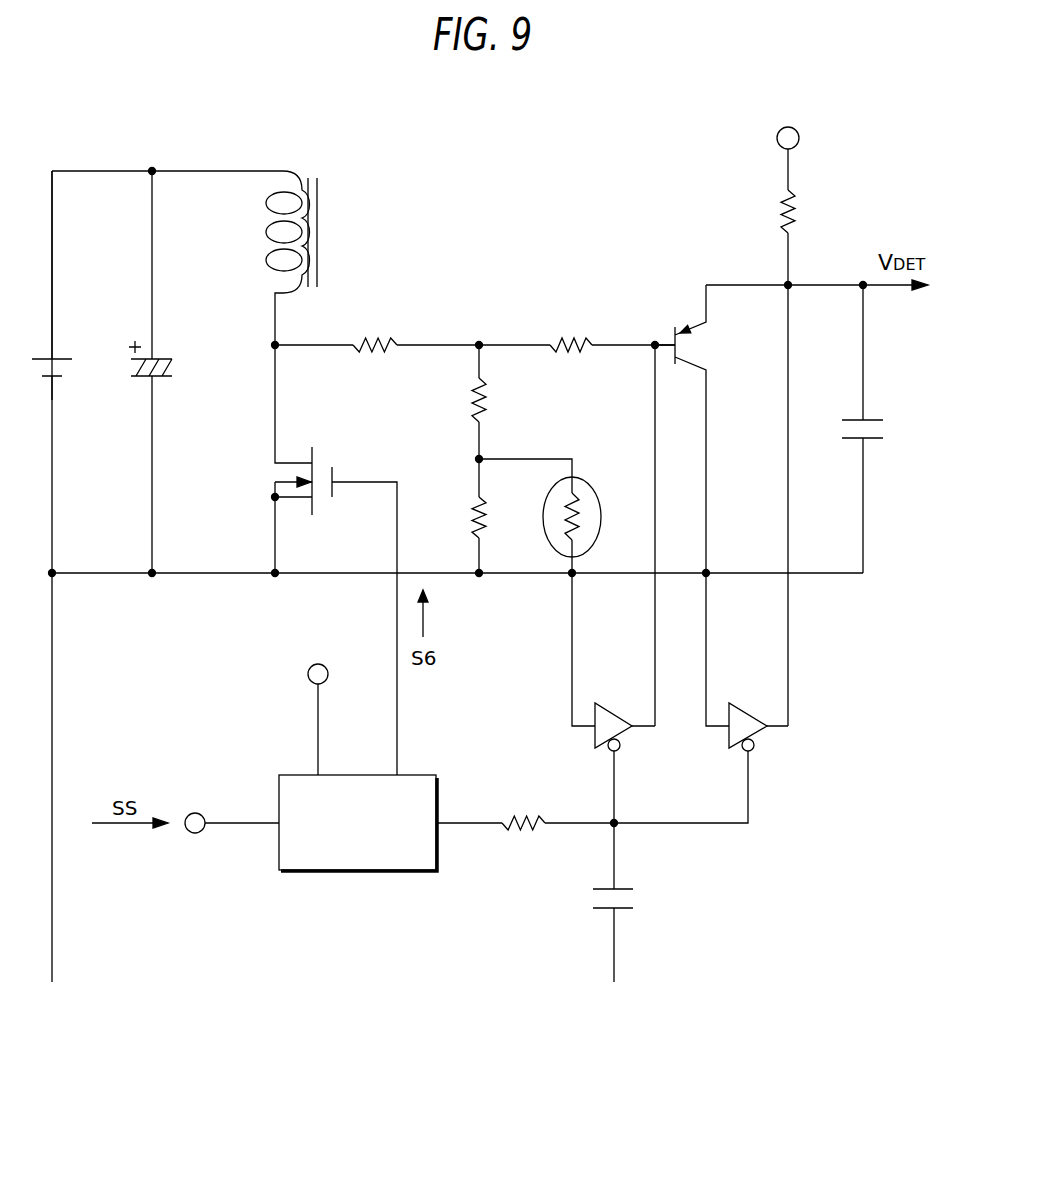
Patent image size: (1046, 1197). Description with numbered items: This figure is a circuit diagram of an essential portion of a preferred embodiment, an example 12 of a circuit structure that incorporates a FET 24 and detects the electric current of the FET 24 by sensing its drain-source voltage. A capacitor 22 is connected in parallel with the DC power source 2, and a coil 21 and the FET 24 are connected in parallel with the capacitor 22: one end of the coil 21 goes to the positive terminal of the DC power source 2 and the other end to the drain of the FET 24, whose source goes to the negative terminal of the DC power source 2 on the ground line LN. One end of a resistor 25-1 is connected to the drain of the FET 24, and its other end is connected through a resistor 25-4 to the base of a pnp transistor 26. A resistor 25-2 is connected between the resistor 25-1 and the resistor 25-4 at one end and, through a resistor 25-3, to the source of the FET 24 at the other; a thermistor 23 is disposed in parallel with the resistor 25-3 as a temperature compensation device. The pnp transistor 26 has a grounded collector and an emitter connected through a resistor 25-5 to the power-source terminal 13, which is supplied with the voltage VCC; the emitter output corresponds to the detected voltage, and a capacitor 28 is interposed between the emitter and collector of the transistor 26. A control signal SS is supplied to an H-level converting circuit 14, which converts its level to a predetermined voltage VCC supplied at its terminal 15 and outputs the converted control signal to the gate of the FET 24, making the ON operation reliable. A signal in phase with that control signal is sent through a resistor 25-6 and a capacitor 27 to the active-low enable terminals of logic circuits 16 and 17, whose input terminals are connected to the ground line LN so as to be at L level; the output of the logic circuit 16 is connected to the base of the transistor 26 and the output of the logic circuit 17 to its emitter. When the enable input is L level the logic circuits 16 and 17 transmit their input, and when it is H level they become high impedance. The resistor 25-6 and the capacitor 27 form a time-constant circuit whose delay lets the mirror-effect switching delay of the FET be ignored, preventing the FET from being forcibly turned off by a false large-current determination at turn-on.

The DC power source 2 is at (62, 359).
The example of a circuit structure 12 is at (887, 793).
The power-source terminal 13 is at (800, 137).
The H-level converting circuit 14 is at (420, 775).
The terminal 15 is at (329, 675).
The logic circuit 16 is at (604, 703).
The logic circuit 17 is at (739, 703).
The coil 21 is at (274, 258).
The capacitor 22 is at (173, 360).
The thermistor 23 is at (554, 516).
The FET 24 is at (317, 453).
The resistor 25-1 is at (377, 330).
The resistor 25-2 is at (506, 402).
The resistor 25-3 is at (456, 516).
The resistor 25-4 is at (577, 330).
The resistor 25-5 is at (762, 237).
The resistor 25-6 is at (525, 809).
The pnp transistor 26 is at (692, 429).
The capacitor 27 is at (630, 935).
The capacitor 28 is at (879, 429).
The ground line LN is at (185, 573).